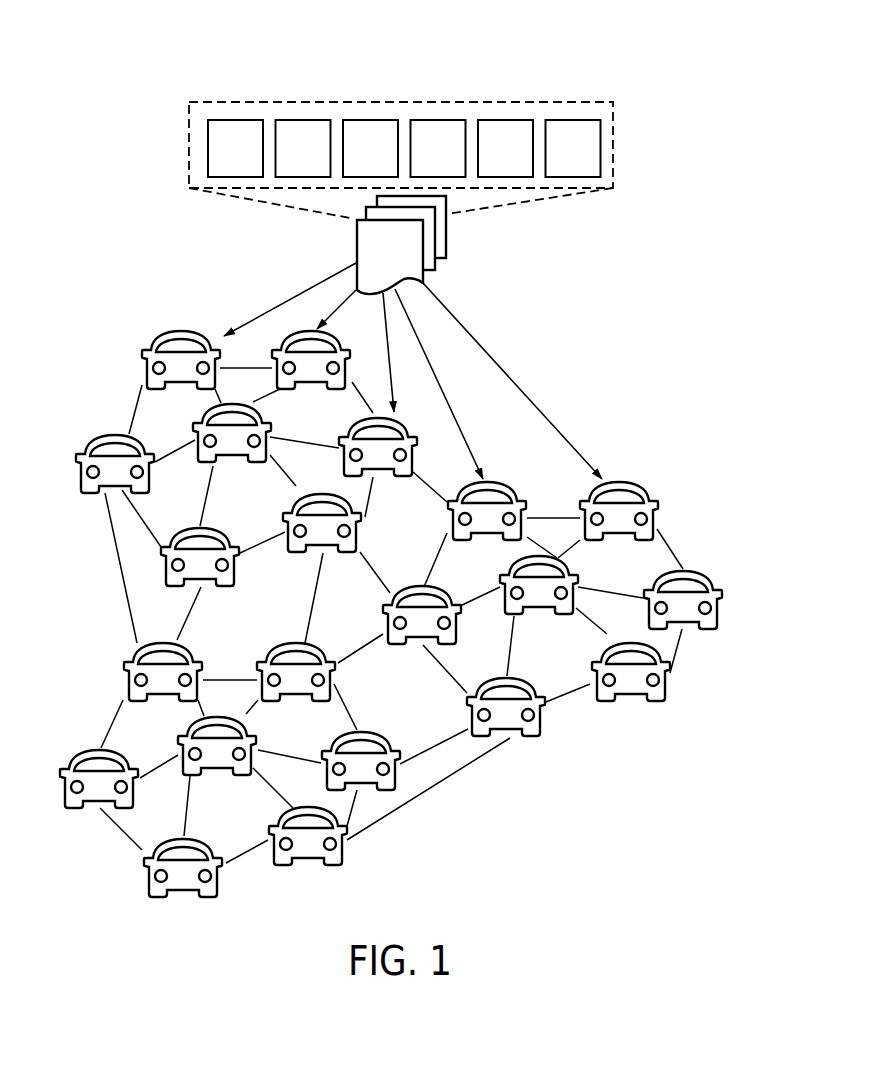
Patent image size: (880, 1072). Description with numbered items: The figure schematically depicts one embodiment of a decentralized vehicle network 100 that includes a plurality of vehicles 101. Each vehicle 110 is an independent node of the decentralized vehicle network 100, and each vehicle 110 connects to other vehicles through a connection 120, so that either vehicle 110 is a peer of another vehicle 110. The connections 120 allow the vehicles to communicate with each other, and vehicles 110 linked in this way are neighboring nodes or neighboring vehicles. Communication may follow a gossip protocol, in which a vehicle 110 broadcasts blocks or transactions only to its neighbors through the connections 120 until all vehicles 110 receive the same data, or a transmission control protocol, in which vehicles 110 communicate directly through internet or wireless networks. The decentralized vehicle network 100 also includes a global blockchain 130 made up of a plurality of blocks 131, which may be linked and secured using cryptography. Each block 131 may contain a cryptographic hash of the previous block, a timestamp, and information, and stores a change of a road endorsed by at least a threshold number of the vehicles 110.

The decentralized vehicle network 100 is at (476, 114).
The plurality of vehicles 101 is at (447, 371).
The vehicle 110 is at (165, 332).
The connection 120 is at (135, 407).
The global blockchain 130 is at (446, 242).
The block 131 is at (236, 120).